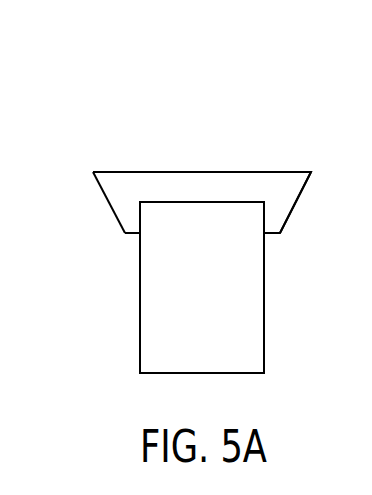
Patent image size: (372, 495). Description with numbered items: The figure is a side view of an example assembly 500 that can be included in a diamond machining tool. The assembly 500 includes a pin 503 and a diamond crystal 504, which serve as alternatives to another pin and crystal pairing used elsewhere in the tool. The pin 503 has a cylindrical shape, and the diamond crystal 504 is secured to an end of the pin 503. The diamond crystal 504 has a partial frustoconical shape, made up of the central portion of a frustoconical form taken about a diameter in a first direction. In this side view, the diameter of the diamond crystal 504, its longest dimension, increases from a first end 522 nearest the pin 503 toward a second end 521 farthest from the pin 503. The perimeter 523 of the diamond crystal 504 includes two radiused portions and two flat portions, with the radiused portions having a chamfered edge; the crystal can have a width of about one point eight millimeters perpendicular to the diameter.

The assembly 500 is at (80, 125).
The second end 521 is at (183, 170).
The diamond crystal 504 is at (301, 170).
The perimeter 523 is at (93, 172).
The first end 522 is at (129, 237).
The pin 503 is at (265, 303).